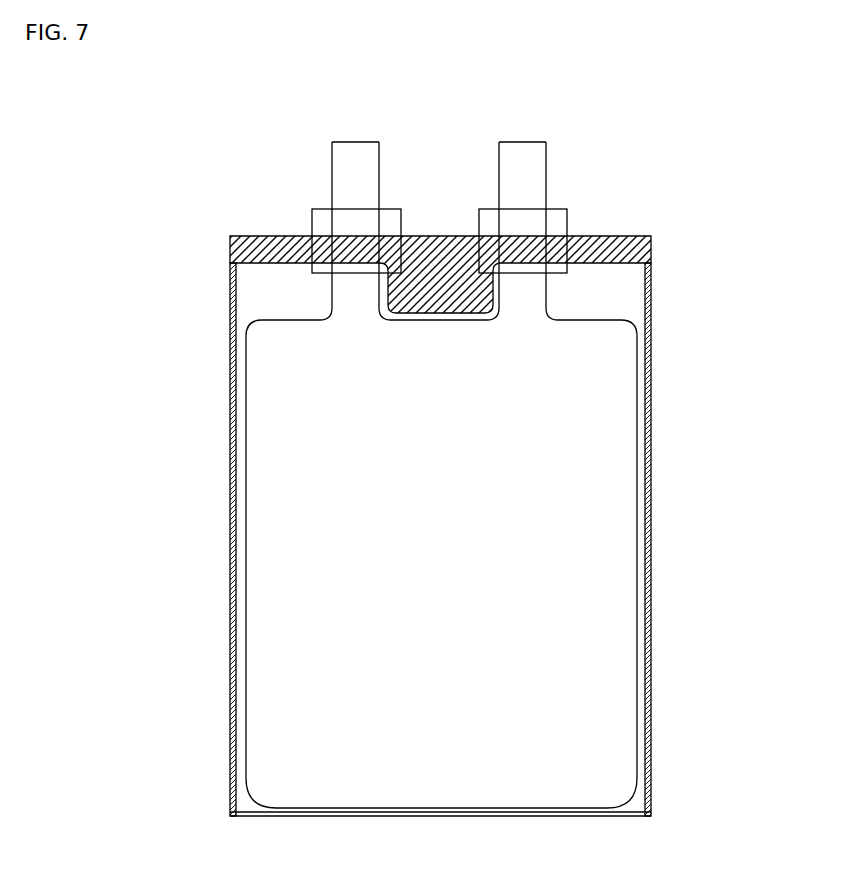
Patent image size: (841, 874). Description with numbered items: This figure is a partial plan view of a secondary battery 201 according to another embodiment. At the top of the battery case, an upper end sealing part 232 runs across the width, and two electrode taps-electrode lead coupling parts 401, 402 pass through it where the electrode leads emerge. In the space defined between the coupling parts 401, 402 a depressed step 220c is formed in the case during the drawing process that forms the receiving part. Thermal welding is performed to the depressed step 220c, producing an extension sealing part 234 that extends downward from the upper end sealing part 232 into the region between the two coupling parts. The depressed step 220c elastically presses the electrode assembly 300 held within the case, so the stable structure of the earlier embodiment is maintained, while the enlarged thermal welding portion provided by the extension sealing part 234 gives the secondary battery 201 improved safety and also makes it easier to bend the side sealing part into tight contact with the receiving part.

The secondary battery 201 is at (126, 185).
The upper end sealing part 232 is at (257, 248).
The extension sealing part 234 is at (463, 293).
The depressed step 220c is at (428, 318).
The electrode assembly 300 is at (613, 615).
The electrode taps-electrode lead coupling part 401 is at (316, 292).
The electrode taps-electrode lead coupling part 402 is at (570, 290).